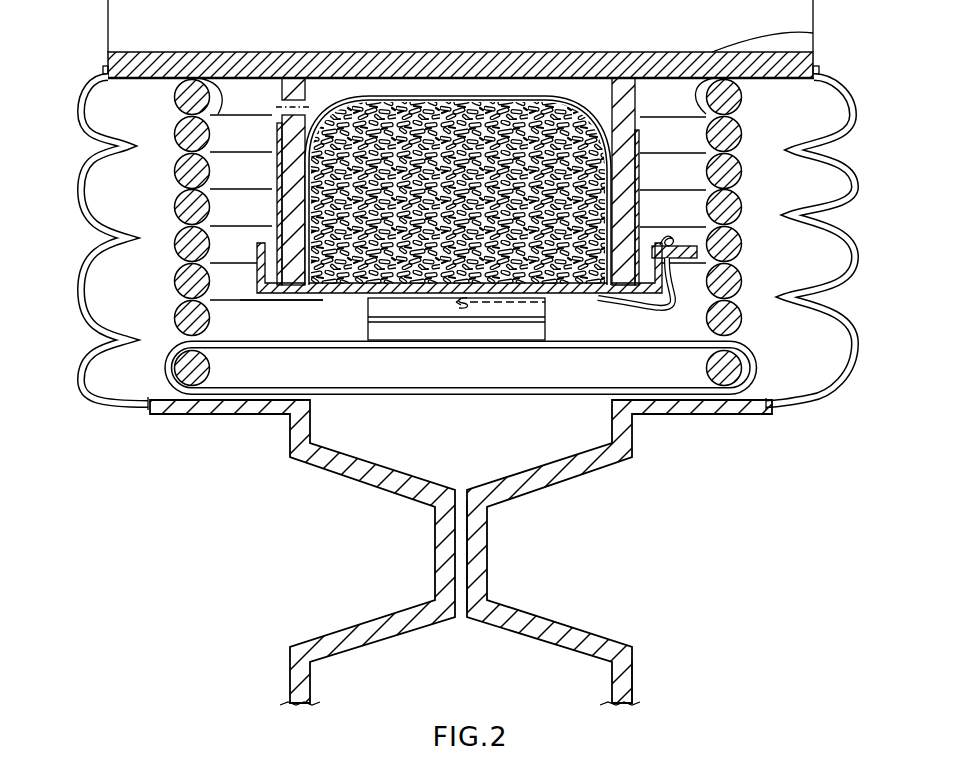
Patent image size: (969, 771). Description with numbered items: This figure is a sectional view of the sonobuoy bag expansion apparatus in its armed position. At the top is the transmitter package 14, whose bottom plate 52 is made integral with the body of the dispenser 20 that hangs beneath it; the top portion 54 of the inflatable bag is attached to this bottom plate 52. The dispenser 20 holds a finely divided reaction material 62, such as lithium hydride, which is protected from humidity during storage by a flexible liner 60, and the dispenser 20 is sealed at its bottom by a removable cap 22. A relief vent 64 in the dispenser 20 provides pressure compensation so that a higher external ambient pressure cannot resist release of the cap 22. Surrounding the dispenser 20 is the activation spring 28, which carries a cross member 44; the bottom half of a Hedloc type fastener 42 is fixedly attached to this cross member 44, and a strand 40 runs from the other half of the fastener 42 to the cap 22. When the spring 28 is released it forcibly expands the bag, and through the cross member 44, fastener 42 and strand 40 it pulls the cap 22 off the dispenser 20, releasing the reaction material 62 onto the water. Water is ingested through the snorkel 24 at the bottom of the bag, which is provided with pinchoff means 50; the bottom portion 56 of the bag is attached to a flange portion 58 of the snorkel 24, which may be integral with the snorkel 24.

The transmitter package 14 is at (460, 39).
The dispenser 20 is at (636, 104).
The cap 22 is at (692, 246).
The snorkel 24 is at (631, 688).
The activation spring 28 is at (741, 174).
The strand 40 is at (648, 293).
The Hedloc type fastener 42 is at (466, 332).
The cross member 44 is at (568, 352).
The pinchoff means 50 is at (490, 525).
The bottom plate 52 is at (815, 35).
The top portion of bag 54 is at (96, 63).
The bottom portion of bag 56 is at (148, 412).
The flange portion 58 is at (254, 413).
The flexible liner 60 is at (356, 108).
The reaction material 62 is at (470, 173).
The relief vent 64 is at (275, 106).